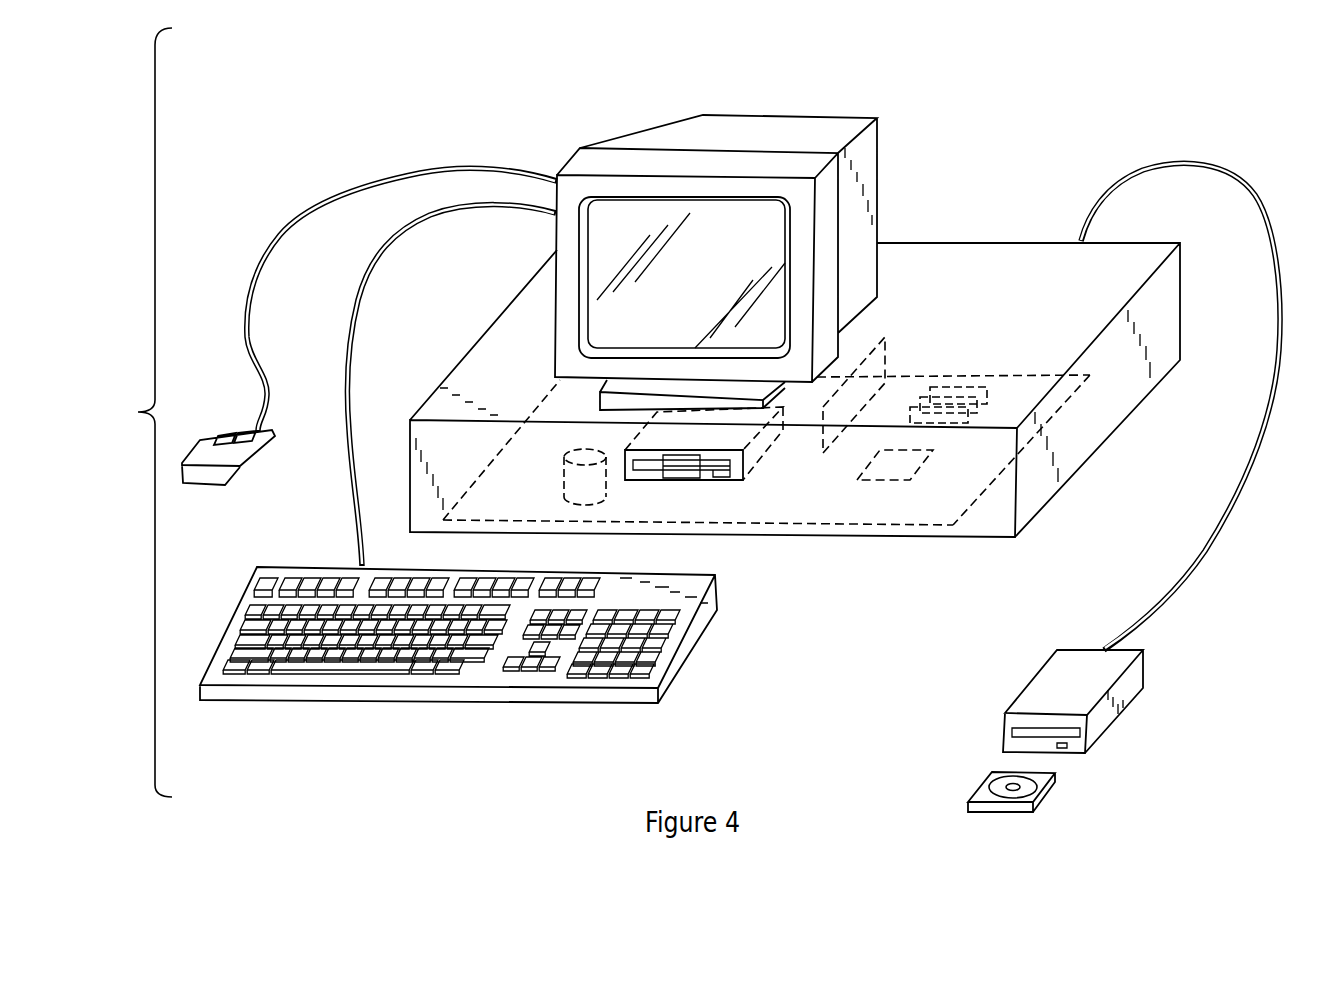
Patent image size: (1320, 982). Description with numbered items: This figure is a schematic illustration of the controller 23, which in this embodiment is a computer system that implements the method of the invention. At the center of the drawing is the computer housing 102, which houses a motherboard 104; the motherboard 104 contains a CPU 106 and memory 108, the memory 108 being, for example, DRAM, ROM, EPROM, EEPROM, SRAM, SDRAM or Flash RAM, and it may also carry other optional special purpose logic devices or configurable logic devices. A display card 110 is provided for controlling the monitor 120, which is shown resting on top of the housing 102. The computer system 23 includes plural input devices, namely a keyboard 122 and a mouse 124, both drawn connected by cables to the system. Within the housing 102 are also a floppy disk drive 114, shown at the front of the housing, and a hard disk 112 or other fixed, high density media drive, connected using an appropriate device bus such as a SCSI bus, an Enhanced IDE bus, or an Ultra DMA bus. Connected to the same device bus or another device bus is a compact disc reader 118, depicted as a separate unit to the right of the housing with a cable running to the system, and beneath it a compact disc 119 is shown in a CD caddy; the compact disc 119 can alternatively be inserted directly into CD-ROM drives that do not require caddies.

The controller 23 is at (128, 412).
The computer housing 102 is at (977, 252).
The motherboard 104 is at (1028, 383).
The CPU 106 is at (907, 477).
The memory 108 is at (943, 393).
The display card 110 is at (890, 350).
The hard disk 112 is at (563, 482).
The floppy disk drive 114 is at (737, 477).
The compact disc reader 118 is at (1055, 665).
The compact disc 119 is at (1030, 785).
The monitor 120 is at (785, 133).
The keyboard 122 is at (707, 613).
The mouse 124 is at (255, 457).